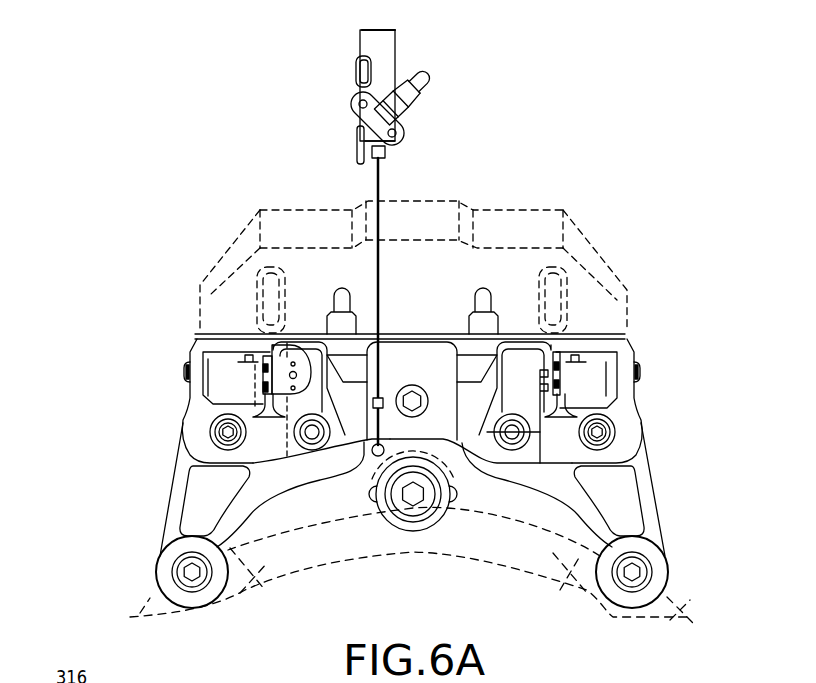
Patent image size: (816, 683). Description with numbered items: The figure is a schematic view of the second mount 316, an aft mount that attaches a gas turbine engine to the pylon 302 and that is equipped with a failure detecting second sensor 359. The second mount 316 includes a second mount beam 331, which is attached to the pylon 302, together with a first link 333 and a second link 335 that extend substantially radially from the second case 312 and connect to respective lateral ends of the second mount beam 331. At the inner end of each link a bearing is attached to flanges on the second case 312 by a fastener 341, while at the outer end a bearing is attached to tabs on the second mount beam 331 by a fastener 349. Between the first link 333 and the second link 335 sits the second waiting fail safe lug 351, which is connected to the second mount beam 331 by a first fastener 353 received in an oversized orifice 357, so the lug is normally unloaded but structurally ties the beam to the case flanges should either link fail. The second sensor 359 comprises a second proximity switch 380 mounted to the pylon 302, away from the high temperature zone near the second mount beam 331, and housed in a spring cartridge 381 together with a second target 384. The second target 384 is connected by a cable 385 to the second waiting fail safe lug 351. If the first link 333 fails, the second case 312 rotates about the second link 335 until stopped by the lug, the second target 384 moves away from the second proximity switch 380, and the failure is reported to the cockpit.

The pylon 302 is at (414, 206).
The second case 312 is at (300, 555).
The second mount 316 is at (149, 196).
The second mount beam 331 is at (480, 398).
The first link 333 is at (175, 488).
The second link 335 is at (645, 473).
The fastener 341 is at (184, 572).
The fastener 349 is at (210, 433).
The second waiting fail safe lug 351 is at (447, 460).
The first fastener 353 is at (385, 394).
The oversized orifice 357 is at (420, 386).
The second sensor 359 is at (256, 122).
The second proximity switch 380 is at (397, 51).
The spring cartridge 381 is at (362, 39).
The second target 384 is at (358, 117).
The cable 385 is at (385, 293).